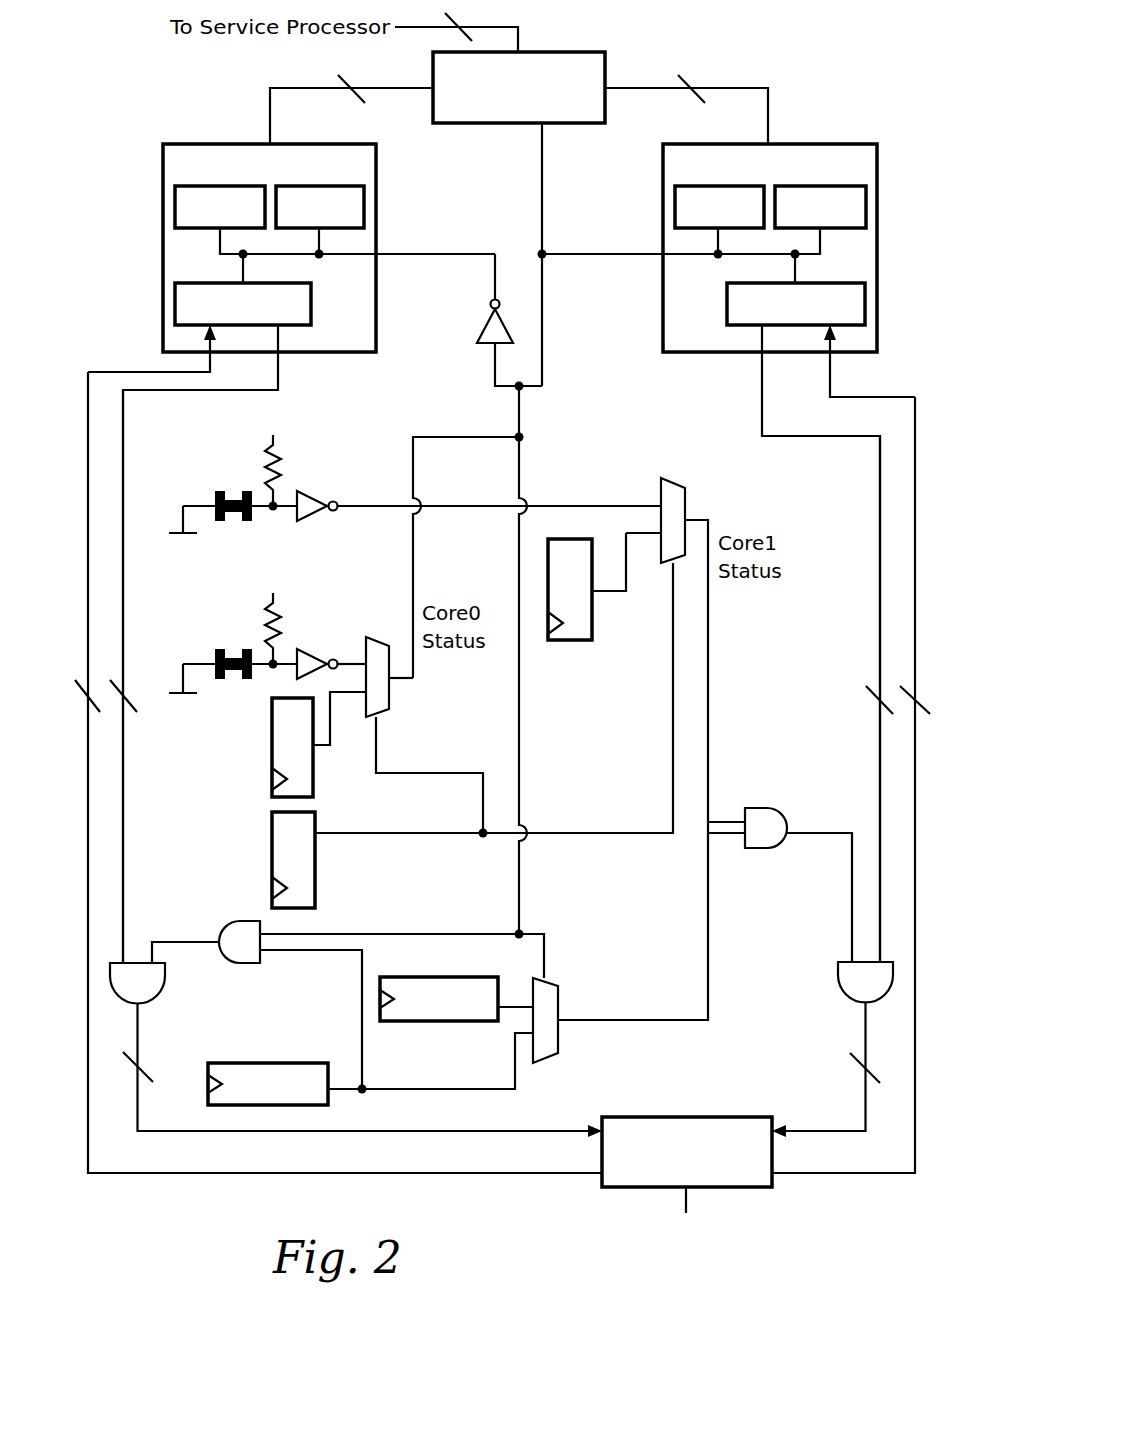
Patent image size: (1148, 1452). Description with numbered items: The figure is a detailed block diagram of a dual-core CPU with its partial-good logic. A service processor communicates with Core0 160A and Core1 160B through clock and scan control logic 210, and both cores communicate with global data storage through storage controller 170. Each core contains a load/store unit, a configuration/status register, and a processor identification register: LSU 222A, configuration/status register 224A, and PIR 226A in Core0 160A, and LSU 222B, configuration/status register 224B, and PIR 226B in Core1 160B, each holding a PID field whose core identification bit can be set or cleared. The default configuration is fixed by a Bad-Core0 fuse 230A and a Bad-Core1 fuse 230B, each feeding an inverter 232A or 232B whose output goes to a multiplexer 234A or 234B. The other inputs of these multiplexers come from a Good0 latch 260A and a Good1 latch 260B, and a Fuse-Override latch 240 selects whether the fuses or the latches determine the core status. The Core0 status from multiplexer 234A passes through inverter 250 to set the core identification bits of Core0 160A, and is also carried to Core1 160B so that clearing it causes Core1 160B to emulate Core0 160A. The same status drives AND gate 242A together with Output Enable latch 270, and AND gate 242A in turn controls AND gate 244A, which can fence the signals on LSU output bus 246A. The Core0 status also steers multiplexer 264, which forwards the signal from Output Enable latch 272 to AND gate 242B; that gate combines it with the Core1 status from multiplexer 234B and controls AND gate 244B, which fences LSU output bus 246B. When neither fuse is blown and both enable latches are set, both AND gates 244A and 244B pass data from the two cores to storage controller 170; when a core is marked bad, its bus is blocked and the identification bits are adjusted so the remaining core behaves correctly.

The Core0 160A is at (198, 112).
The Core1 160B is at (830, 144).
The clock and scan control logic 210 is at (560, 52).
The configuration/status register 224A is at (175, 206).
The configuration/status register 224B is at (866, 206).
The processor identification register (PIR) 226A is at (364, 206).
The processor identification register (PIR) 226B is at (675, 206).
The load/store unit (LSU) 222A is at (175, 302).
The load/store unit (LSU) 222B is at (865, 302).
The inverter 250 is at (480, 326).
The Bad-Core0 fuse 230A is at (210, 640).
The Bad-Core1 fuse 230B is at (210, 482).
The inverter 232A is at (314, 646).
The inverter 232B is at (314, 488).
The multiplexer 234A is at (390, 696).
The multiplexer 234B is at (685, 508).
The Good0 latch 260A is at (272, 746).
The Good1 latch 260B is at (582, 640).
The LSU output bus 246A is at (123, 819).
The LSU output bus 246B is at (880, 641).
The Fuse-Override latch 240 is at (272, 860).
The AND gate 242A is at (245, 921).
The AND gate 242B is at (776, 808).
The AND gate 244A is at (165, 984).
The AND gate 244B is at (856, 1001).
The multiplexer 264 is at (558, 1010).
The Output Enable latch 270 is at (290, 1063).
The Output Enable latch 272 is at (478, 1021).
The storage controller 170 is at (740, 1117).